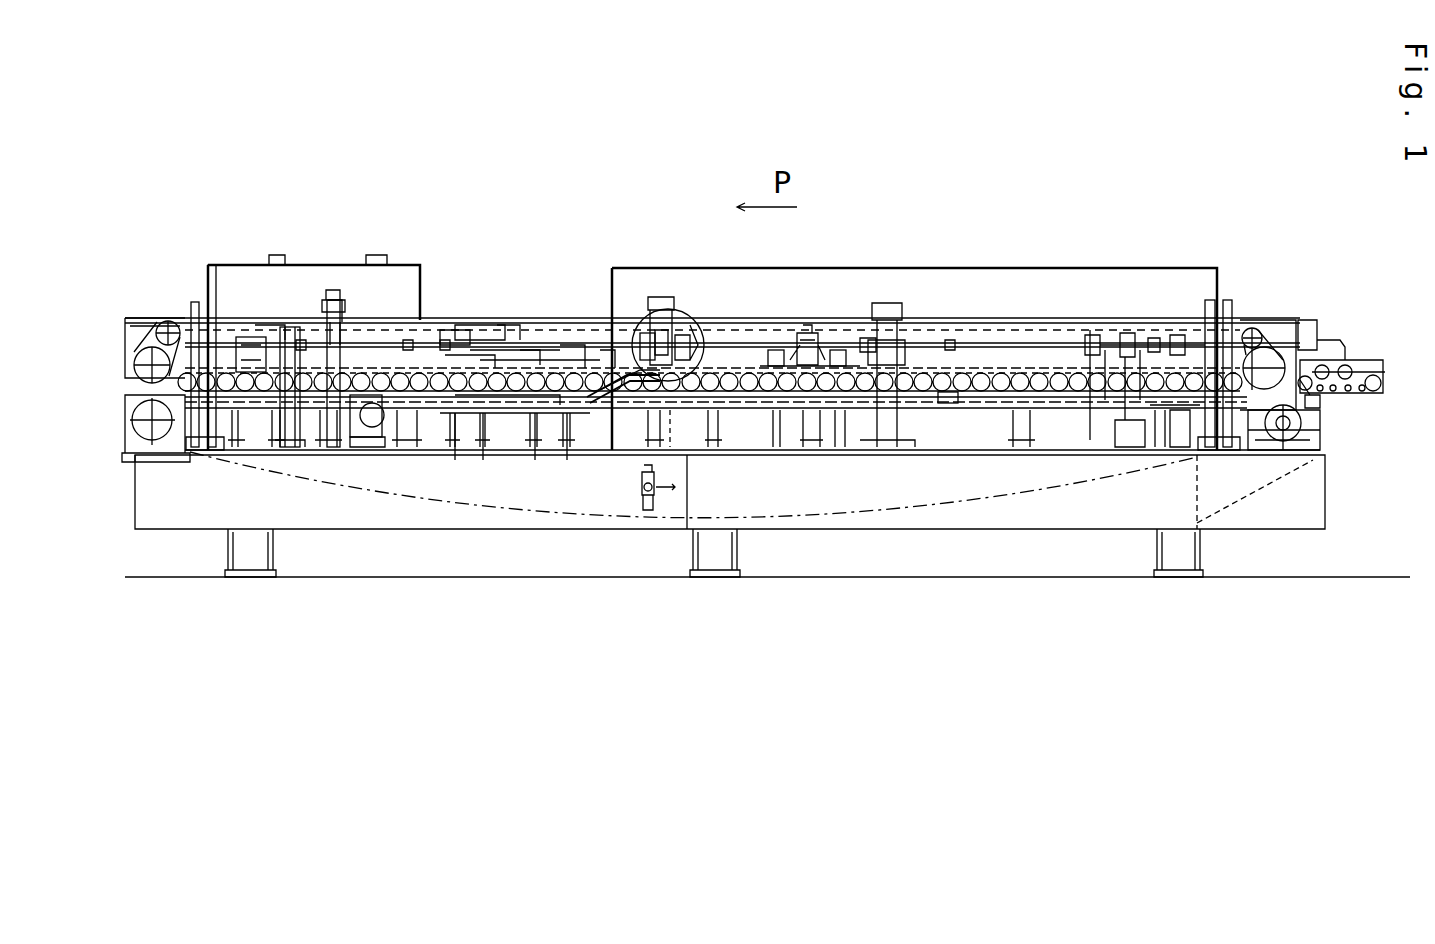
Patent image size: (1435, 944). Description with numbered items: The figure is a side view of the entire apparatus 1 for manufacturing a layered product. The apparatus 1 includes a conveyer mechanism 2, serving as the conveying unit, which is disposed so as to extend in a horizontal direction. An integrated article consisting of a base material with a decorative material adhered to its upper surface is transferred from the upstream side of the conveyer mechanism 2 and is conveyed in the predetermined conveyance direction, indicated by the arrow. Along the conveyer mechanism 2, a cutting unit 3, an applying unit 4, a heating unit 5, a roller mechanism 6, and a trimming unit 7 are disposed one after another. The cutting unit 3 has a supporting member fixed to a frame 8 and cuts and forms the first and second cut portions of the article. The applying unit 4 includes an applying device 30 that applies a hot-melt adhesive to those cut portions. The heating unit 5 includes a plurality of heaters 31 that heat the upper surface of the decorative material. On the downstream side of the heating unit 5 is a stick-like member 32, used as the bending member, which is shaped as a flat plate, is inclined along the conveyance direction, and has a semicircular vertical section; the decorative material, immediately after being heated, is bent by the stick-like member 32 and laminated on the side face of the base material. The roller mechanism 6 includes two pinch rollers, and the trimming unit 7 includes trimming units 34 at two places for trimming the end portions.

The apparatus for manufacturing a layered product 1 is at (919, 217).
The conveyer mechanism 2 is at (1038, 367).
The cutting unit 3 is at (1152, 324).
The applying unit 4 is at (987, 357).
The heating unit 5 is at (745, 332).
The roller mechanism 6 is at (514, 329).
The trimming unit 7 is at (301, 287).
The frame 8 is at (1327, 483).
The applying device 30 is at (962, 377).
The heaters 31 is at (645, 330).
The stick-like member 32 is at (640, 377).
The trimming units 34 is at (257, 362).